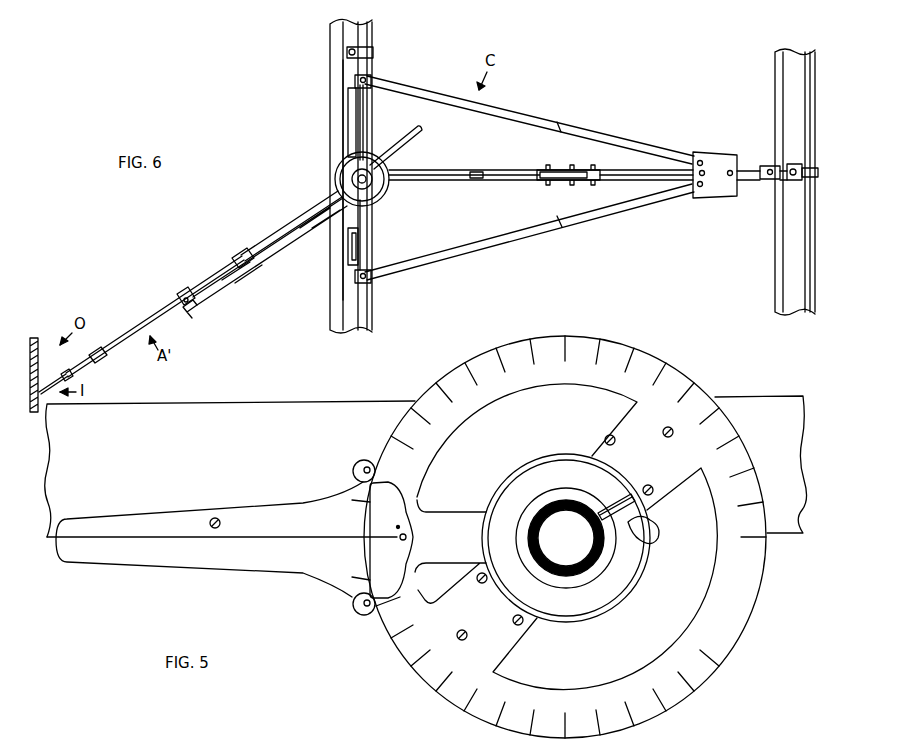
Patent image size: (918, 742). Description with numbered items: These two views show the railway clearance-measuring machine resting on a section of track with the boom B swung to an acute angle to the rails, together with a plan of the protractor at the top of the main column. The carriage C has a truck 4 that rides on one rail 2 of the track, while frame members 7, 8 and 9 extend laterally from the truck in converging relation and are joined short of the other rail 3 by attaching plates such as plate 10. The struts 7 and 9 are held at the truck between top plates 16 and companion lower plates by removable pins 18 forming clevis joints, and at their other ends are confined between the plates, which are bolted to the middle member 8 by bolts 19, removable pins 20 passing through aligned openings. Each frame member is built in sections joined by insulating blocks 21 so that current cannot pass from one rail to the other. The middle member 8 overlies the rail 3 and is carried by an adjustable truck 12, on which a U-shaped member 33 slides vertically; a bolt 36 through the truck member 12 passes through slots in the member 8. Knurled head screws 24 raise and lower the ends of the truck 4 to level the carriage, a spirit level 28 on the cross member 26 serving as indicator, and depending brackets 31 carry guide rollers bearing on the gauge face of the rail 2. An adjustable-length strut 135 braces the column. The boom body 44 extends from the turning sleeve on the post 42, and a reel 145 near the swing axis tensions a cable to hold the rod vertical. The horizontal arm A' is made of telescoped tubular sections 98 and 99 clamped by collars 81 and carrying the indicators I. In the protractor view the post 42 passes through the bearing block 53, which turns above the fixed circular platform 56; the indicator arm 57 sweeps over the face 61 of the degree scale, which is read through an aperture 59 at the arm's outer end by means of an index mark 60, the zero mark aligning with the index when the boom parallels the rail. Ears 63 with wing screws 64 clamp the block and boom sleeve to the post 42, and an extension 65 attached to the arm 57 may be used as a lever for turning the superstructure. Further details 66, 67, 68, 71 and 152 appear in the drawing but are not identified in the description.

In FIG. 6, the rail 2 is at (338, 32).
In FIG. 5, the rail 2 is at (426, 466).
In FIG. 6, the rail 3 is at (790, 78).
In FIG. 6, the truck 4 is at (343, 116).
In FIG. 6, the frame member 7 is at (466, 252).
In FIG. 6, the frame member 8 is at (508, 182).
In FIG. 6, the frame member 9 is at (521, 118).
In FIG. 6, the attaching plate 10 is at (720, 196).
In FIG. 6, the adjustable truck 12 is at (760, 181).
In FIG. 6, the top plate 16 is at (355, 80).
In FIG. 6, the removable pin 18 is at (368, 80).
In FIG. 6, the bolt 19 is at (705, 171).
In FIG. 6, the removable pin 20 is at (702, 160).
In FIG. 6, the insulating block 21 is at (572, 126).
In FIG. 6, the knurled head screw 24 is at (349, 52).
In FIG. 6, the cross member 26 is at (350, 140).
In FIG. 6, the spirit level 28 is at (359, 250).
In FIG. 6, the depending bracket 31 is at (374, 52).
In FIG. 6, the U-shaped member 33 is at (793, 164).
In FIG. 6, the bolt 36 is at (770, 166).
In FIG. 5, the post 42 is at (543, 543).
In FIG. 6, the boom body 44 is at (270, 250).
In FIG. 5, the bearing block 53 is at (637, 573).
In FIG. 6, the circular platform 56 is at (380, 192).
In FIG. 5, the circular platform 56 is at (565, 537).
In FIG. 6, the indicator arm 57 is at (375, 162).
In FIG. 5, the indicator arm 57 is at (444, 518).
In FIG. 5, the aperture 59 is at (356, 582).
In FIG. 5, the index mark 60 is at (392, 527).
In FIG. 5, the protractor scale 61 is at (670, 700).
In FIG. 5, the ear 63 is at (615, 498).
In FIG. 5, the wing screw 64 is at (660, 530).
In FIG. 6, the extension 65 is at (409, 138).
In FIG. 5, the extension 65 is at (190, 565).
In FIG. 5, the roller 66 is at (357, 466).
In FIG. 5, the roller pin 67 is at (366, 466).
In FIG. 6, the coupling 68 is at (182, 288).
In FIG. 6, the bracket 71 is at (193, 312).
In FIG. 6, the clamping collar 81 is at (107, 358).
In FIG. 6, the tubular section 98 is at (143, 325).
In FIG. 6, the tubular section 99 is at (73, 376).
In FIG. 6, the adjustable length strut 135 is at (450, 170).
In FIG. 6, the reel 145 is at (236, 254).
In FIG. 6, the rod 152 is at (306, 205).